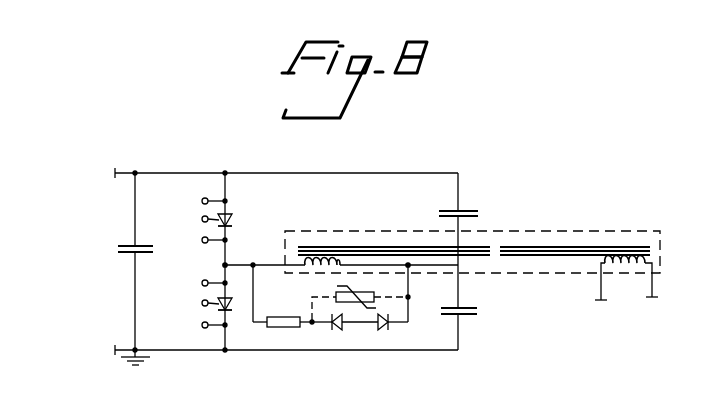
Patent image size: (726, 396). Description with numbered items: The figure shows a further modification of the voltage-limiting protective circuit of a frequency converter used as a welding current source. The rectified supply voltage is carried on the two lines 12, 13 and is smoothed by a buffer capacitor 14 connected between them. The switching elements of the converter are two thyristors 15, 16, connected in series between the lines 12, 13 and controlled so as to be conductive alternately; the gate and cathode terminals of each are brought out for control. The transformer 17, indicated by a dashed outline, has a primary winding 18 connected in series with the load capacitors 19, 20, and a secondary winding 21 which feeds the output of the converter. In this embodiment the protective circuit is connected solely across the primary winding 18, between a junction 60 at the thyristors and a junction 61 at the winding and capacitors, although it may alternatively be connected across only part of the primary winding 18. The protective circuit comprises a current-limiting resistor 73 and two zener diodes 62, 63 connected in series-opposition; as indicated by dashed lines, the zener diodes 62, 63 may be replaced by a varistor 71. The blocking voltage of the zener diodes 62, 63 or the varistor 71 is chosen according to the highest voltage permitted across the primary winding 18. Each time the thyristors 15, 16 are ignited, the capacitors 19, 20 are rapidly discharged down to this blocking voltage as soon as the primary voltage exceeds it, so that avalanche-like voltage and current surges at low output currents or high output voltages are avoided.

The line 12 is at (176, 172).
The line 13 is at (190, 352).
The buffer capacitor 14 is at (123, 246).
The thyristor 15 is at (229, 214).
The thyristor 16 is at (231, 306).
The transformer 17 is at (543, 231).
The primary winding 18 is at (313, 258).
The load capacitor 19 is at (466, 212).
The load capacitor 20 is at (470, 315).
The secondary winding 21 is at (612, 266).
The junction point 60 is at (229, 263).
The junction point 61 is at (409, 266).
The zener diode 62 is at (338, 331).
The zener diode 63 is at (384, 331).
The varistor 71 is at (366, 291).
The current-limiting resistor 73 is at (288, 328).